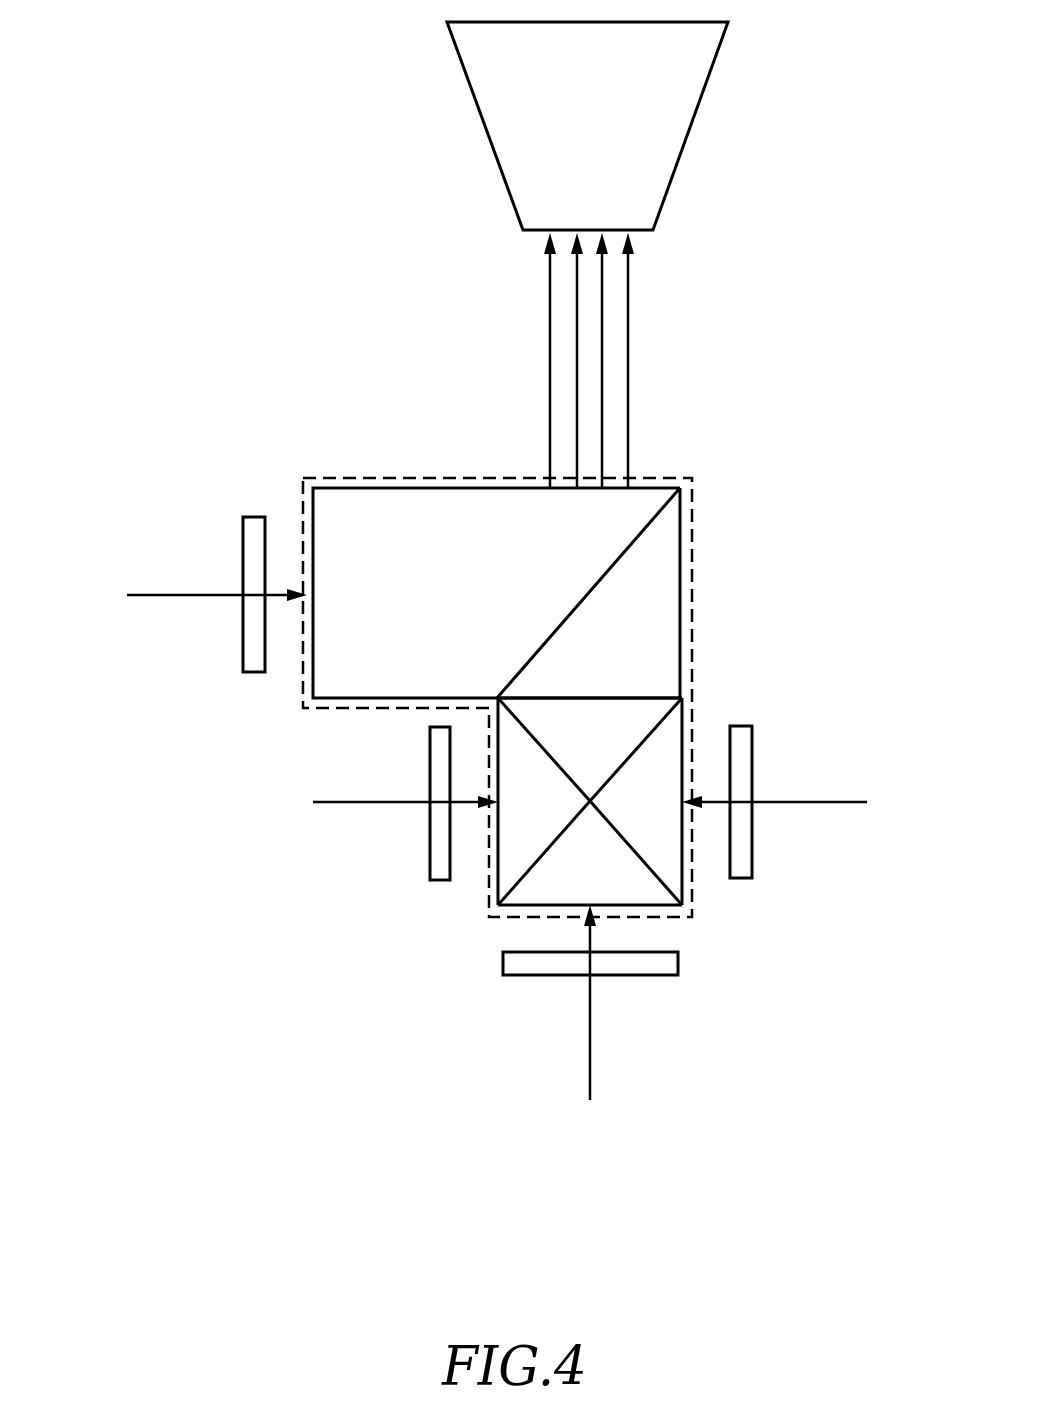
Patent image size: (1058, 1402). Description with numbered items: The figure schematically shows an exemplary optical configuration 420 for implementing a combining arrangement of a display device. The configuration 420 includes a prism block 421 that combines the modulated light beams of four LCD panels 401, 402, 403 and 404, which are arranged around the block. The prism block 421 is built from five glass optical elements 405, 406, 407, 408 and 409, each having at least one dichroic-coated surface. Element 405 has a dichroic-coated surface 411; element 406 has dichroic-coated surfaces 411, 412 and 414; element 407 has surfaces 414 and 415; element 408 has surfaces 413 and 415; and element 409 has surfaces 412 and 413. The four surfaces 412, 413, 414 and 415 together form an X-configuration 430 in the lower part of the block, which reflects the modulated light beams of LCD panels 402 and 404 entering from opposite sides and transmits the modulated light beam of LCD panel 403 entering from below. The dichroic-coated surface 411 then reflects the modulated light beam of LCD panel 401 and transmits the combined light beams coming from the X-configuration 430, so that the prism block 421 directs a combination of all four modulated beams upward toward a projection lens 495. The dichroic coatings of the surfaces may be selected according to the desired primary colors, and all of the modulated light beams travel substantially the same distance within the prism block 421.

The optical configuration 420 is at (128, 206).
The projection lens 495 is at (687, 148).
The prism block 421 is at (670, 468).
The glass element 405 is at (442, 540).
The glass element 406 is at (623, 633).
The dichroic-coated surface 411 is at (643, 537).
The glass element 407 is at (648, 828).
The glass element 408 is at (623, 865).
The glass element 409 is at (528, 823).
The dichroic-coated surface 412 is at (528, 730).
The dichroic-coated surface 413 is at (553, 845).
The dichroic-coated surface 414 is at (662, 717).
The dichroic-coated surface 415 is at (667, 883).
The X-configuration 430 is at (608, 792).
The LCD panel 401 is at (243, 566).
The LCD panel 402 is at (430, 841).
The LCD panel 403 is at (577, 977).
The LCD panel 404 is at (753, 757).